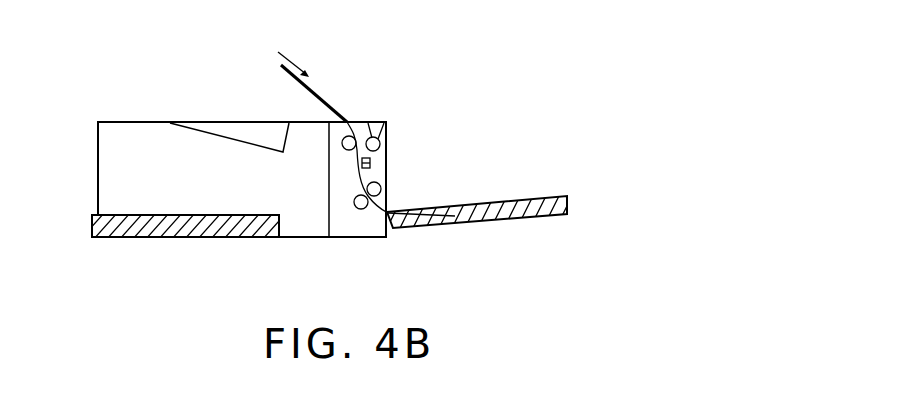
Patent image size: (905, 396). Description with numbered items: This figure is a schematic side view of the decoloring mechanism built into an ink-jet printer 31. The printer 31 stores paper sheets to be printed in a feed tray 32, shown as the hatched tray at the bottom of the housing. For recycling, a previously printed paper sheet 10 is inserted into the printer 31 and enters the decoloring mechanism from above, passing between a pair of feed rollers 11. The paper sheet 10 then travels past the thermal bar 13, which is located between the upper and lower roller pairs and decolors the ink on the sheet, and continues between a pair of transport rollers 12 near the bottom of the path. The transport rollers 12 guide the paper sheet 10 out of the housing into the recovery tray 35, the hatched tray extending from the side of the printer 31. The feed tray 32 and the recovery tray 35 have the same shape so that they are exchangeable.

The printed paper sheet 10 is at (330, 103).
The feed rollers 11 is at (381, 142).
The transport rollers 12 is at (362, 214).
The thermal bar 13 is at (372, 164).
The printer 31 is at (96, 148).
The feed tray 32 is at (162, 238).
The recovery tray 35 is at (573, 203).